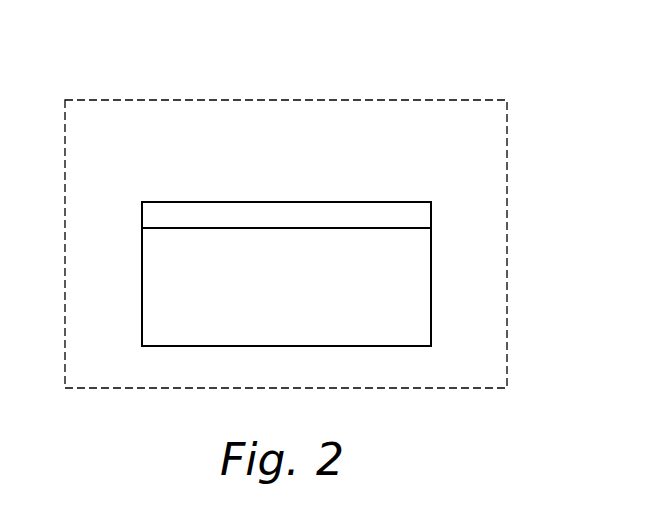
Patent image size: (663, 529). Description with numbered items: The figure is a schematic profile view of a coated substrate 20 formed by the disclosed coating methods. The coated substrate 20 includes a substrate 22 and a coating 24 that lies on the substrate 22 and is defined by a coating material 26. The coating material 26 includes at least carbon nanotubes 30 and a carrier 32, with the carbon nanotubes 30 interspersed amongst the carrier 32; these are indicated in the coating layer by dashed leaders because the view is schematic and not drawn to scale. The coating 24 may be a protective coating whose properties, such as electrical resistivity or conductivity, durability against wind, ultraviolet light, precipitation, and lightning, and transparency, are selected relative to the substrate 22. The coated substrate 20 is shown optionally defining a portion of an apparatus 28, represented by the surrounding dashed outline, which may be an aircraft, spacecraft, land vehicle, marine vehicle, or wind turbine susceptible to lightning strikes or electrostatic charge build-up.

The coated substrate 20 is at (396, 160).
The substrate 22 is at (431, 295).
The coating 24 is at (283, 188).
The coating material 26 is at (327, 201).
The apparatus 28 is at (468, 100).
The carbon nanotubes 30 is at (162, 212).
The carrier 32 is at (203, 213).